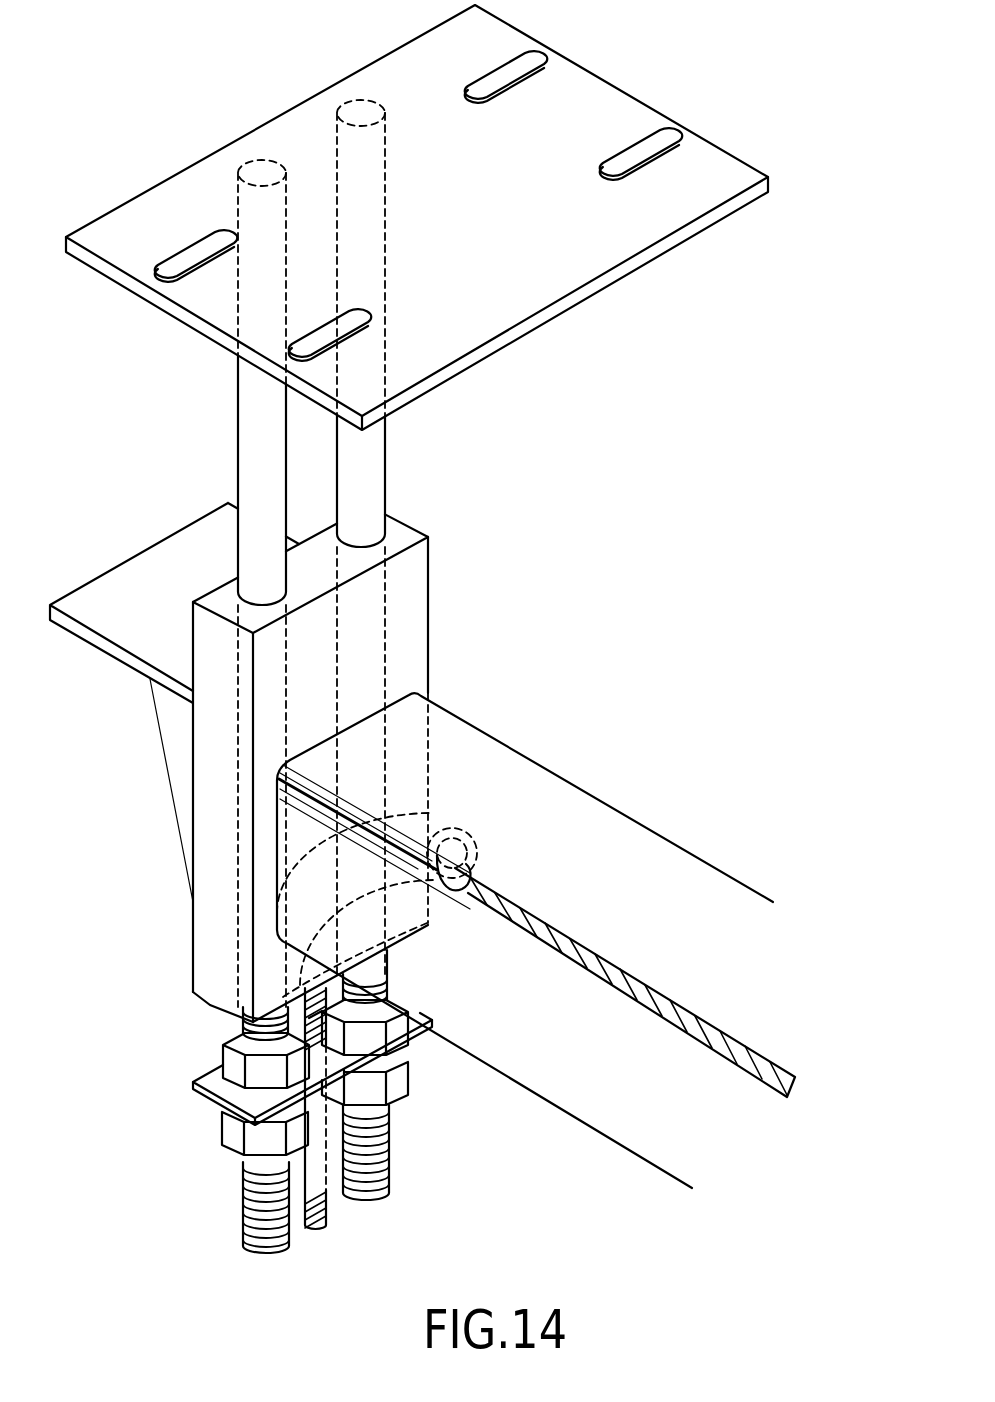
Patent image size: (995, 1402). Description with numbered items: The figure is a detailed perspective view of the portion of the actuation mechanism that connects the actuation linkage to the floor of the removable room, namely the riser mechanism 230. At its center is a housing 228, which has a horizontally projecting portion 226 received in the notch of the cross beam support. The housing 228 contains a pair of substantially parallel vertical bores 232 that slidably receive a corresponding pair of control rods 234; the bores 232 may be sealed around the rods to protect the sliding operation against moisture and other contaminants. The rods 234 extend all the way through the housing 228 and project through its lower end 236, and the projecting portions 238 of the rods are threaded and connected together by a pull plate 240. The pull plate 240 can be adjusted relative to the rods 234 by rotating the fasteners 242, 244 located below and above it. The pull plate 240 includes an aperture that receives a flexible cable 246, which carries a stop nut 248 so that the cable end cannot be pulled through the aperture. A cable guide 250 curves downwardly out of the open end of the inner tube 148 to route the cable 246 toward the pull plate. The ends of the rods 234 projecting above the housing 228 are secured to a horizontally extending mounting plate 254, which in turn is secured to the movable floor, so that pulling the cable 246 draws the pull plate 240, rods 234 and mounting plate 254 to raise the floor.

The inner tube 148 is at (617, 840).
The horizontally projecting portion 226 is at (112, 618).
The housing 228 is at (314, 776).
The riser mechanism 230 is at (340, 776).
The vertical bores 232 is at (380, 573).
The control rods 234 is at (247, 448).
The lower end 236 is at (213, 1007).
The projecting portions 238 is at (263, 1203).
The pull plate 240 is at (337, 1053).
The fasteners 242 is at (260, 1135).
The fasteners 244 is at (237, 1065).
The flexible cable 246 is at (678, 1013).
The stop nut 248 is at (313, 1173).
The cable guide 250 is at (430, 813).
The mounting plate 254 is at (597, 107).